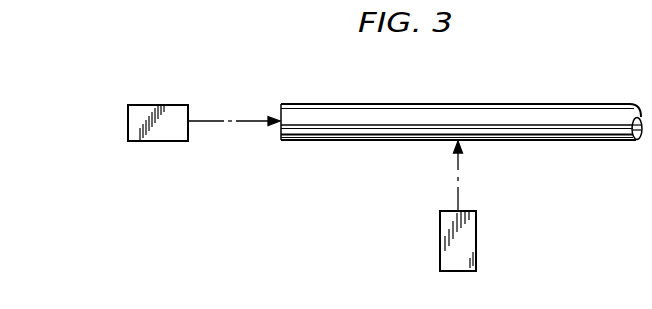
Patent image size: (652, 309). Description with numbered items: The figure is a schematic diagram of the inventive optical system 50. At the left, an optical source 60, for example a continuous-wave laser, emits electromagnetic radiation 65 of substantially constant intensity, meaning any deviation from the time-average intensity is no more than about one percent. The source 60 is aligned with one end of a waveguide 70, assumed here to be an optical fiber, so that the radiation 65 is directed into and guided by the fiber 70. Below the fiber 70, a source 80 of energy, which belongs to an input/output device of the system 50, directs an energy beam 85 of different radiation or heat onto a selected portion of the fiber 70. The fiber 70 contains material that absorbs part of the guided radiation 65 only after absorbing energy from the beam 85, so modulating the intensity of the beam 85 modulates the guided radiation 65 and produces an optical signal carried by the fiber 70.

The optical system 50 is at (461, 131).
The optical source 60 is at (159, 141).
The electromagnetic radiation 65 is at (251, 123).
The waveguide 70 is at (566, 141).
The source of energy 80 is at (440, 238).
The energy beam 85 is at (458, 165).